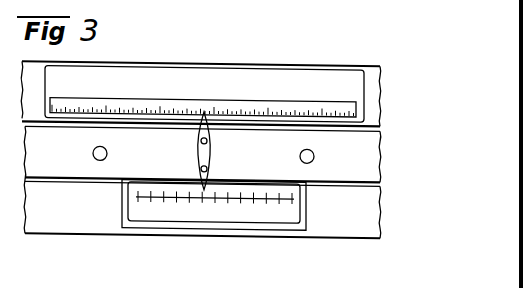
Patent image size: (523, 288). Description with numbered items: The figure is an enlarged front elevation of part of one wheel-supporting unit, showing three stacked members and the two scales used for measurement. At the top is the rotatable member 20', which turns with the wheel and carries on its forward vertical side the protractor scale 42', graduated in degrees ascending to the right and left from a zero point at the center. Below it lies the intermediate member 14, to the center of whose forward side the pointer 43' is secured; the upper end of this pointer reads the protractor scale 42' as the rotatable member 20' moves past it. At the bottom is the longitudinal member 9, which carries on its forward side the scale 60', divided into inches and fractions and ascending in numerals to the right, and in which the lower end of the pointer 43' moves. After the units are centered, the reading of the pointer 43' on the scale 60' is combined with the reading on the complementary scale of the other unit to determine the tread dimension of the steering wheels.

The longitudinal member 9 is at (350, 235).
The intermediate member 14 is at (363, 168).
The rotatable member 20' is at (216, 75).
The protractor scale 42' is at (203, 74).
The pointer 43' is at (232, 151).
The scale 60' is at (214, 226).